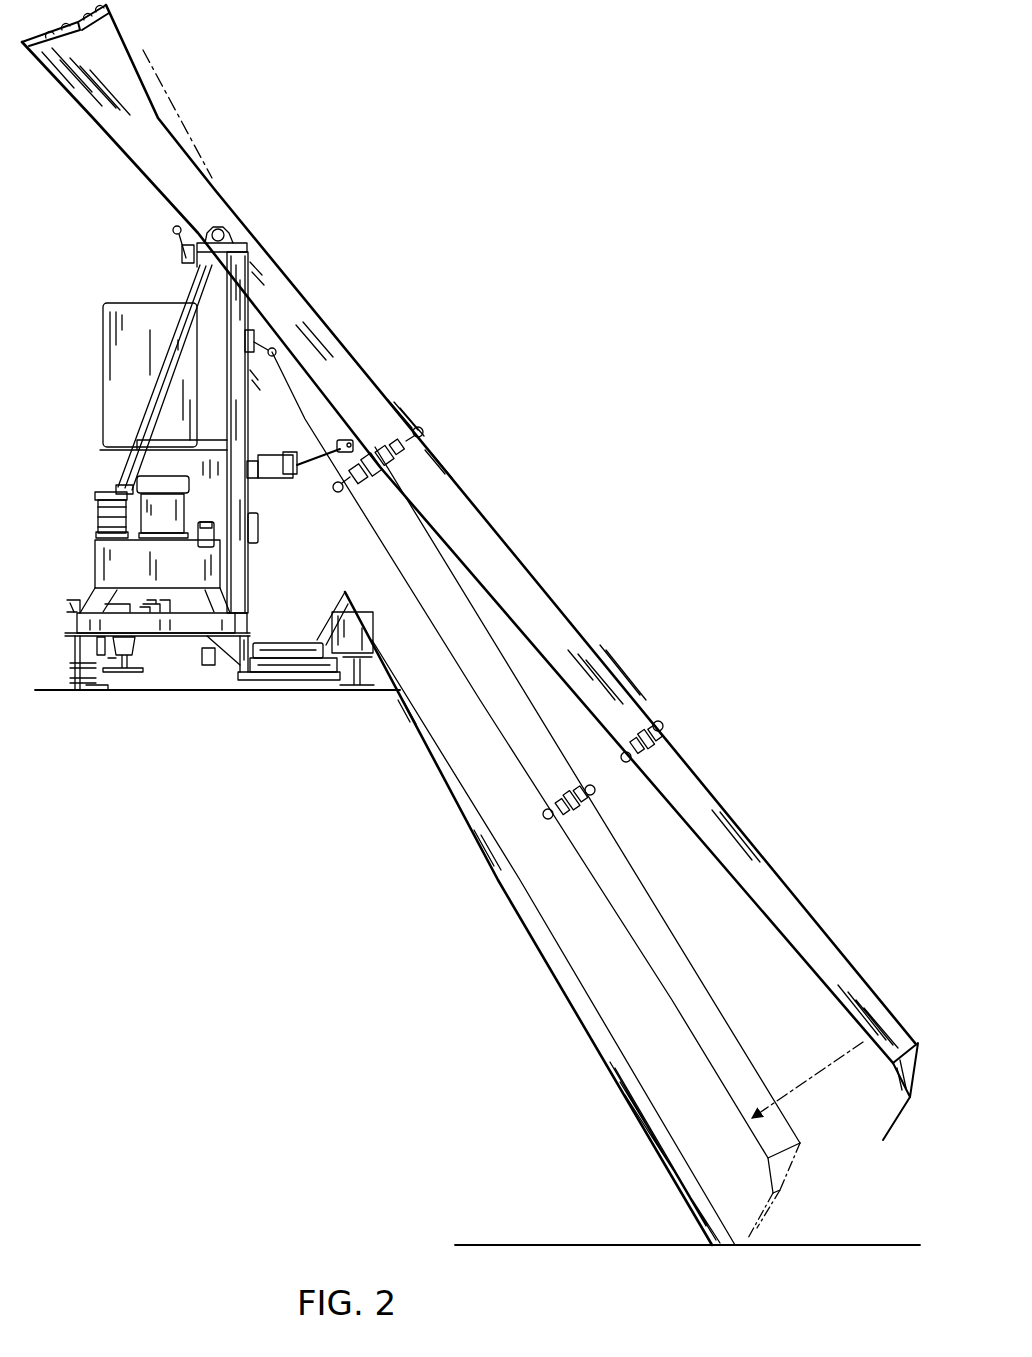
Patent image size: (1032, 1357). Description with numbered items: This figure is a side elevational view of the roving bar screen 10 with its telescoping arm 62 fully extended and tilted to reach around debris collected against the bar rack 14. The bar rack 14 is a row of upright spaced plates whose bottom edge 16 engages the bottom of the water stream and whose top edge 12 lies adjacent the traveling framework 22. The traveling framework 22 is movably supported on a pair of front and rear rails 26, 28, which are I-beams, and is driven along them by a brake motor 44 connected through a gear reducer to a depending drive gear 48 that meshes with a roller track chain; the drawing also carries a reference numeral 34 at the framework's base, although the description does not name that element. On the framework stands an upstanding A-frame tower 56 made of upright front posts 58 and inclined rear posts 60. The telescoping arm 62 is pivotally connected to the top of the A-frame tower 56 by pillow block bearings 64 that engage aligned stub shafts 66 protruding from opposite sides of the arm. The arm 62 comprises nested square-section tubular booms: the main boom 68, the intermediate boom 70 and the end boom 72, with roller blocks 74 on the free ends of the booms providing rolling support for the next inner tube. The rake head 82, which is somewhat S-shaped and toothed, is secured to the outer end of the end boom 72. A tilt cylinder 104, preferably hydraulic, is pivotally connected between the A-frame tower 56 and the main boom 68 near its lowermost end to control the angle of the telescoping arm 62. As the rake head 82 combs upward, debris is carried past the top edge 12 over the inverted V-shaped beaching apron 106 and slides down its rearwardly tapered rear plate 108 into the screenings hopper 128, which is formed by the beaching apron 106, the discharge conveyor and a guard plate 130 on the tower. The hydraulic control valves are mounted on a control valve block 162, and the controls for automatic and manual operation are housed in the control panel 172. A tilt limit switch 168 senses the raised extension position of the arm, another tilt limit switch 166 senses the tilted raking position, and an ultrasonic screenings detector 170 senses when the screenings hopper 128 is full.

The roving bar screen 10 is at (420, 302).
The top edge 12 is at (390, 690).
The bar rack 14 is at (500, 875).
The bottom edge 16 is at (710, 1243).
The traveling framework 22 is at (90, 393).
The front rail 26 is at (183, 724).
The rear rail 28 is at (103, 688).
The base frame 34 is at (178, 638).
The brake motor 44 is at (152, 614).
The drive gear 48 is at (130, 674).
The A-frame tower 56 is at (183, 282).
The front posts 58 is at (236, 285).
The rear posts 60 is at (190, 295).
The telescoping arm 62 is at (213, 177).
The pillow block bearings 64 is at (235, 241).
The stub shafts 66 is at (224, 229).
The main boom 68 is at (363, 390).
The intermediate boom 70 is at (562, 632).
The end boom 72 is at (755, 860).
The roller blocks 74 is at (422, 425).
The rake head 82 is at (905, 1120).
The tilt cylinder 104 is at (279, 462).
The beaching apron 106 is at (372, 622).
The rear plate 108 is at (317, 635).
The screenings hopper 128 is at (285, 636).
The guard plate 130 is at (252, 566).
The control valve block 162 is at (100, 517).
The tilt limit switch 166 is at (253, 335).
The tilt limit switch 168 is at (183, 255).
The ultrasonic screenings detector 170 is at (257, 529).
The control panel 172 is at (117, 335).